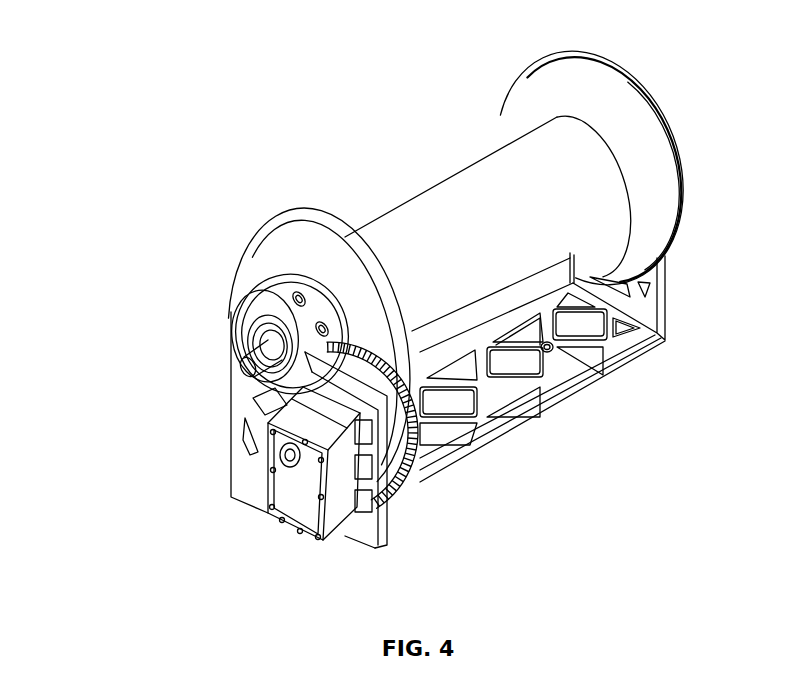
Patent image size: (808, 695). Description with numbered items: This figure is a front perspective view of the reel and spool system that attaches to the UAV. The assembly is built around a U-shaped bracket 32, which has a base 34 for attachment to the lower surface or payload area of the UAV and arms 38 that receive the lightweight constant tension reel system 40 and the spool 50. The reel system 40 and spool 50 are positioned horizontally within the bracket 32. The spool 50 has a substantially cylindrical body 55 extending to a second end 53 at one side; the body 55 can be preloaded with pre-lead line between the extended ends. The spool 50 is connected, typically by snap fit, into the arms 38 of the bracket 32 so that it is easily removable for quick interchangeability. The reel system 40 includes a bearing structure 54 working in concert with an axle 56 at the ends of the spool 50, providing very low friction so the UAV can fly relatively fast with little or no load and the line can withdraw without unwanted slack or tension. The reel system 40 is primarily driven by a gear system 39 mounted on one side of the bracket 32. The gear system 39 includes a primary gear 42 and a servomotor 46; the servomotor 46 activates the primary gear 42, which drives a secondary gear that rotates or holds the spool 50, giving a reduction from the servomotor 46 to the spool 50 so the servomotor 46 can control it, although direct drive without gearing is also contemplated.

The spool 50 is at (382, 268).
The body 55 is at (417, 187).
The second end 53 is at (275, 208).
The bearing structure 54 is at (283, 274).
The axle 56 is at (238, 362).
The servomotor 46 is at (278, 478).
The lightweight constant tension reel system 40 is at (390, 490).
The gear system 39 is at (408, 477).
The primary gear 42 is at (430, 447).
The U-shaped bracket 32 is at (492, 447).
The base 34 is at (613, 382).
The arms 38 is at (675, 297).